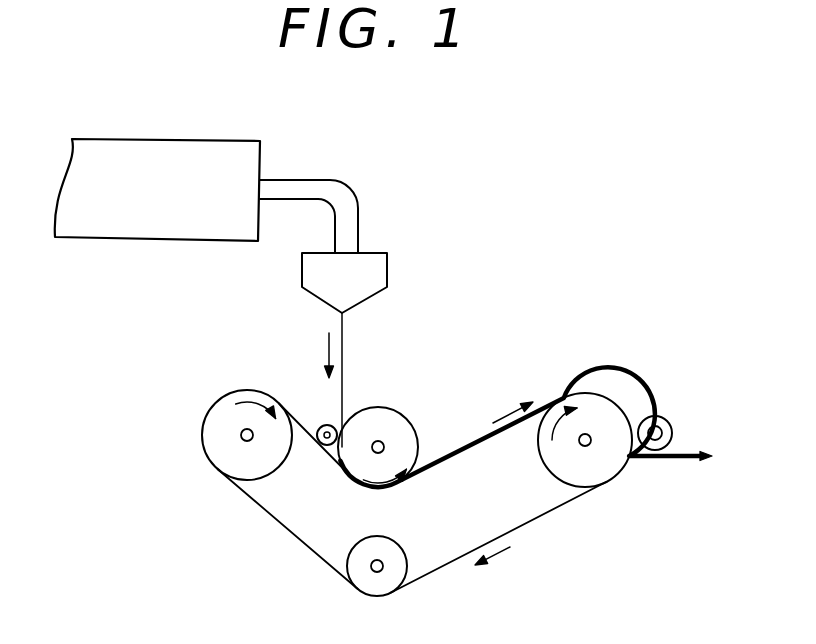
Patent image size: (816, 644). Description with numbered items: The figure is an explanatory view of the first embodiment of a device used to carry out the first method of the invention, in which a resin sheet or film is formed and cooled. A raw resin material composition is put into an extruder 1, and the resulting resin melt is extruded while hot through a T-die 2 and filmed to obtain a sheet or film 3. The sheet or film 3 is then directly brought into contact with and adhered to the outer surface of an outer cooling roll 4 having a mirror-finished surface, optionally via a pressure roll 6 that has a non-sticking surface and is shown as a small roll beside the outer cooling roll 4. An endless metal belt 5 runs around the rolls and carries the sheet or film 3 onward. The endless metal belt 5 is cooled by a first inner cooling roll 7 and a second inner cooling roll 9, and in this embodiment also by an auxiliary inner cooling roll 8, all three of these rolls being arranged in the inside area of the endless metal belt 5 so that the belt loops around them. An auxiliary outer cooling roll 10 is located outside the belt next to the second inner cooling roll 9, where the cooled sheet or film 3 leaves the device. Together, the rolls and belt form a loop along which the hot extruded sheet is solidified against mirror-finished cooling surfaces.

The extruder 1 is at (222, 140).
The T-die 2 is at (388, 276).
The sheet or film 3 is at (343, 367).
The outer cooling roll 4 is at (410, 417).
The endless metal belt 5 is at (543, 517).
The pressure roll 6 is at (322, 423).
The first inner cooling roll 7 is at (203, 422).
The auxiliary inner cooling roll 8 is at (390, 534).
The second inner cooling roll 9 is at (591, 405).
The auxiliary outer cooling roll 10 is at (673, 418).